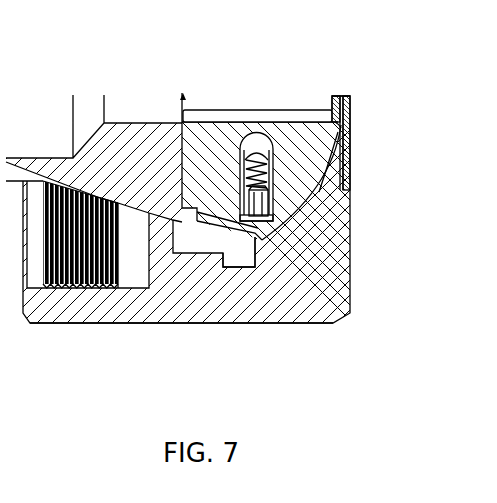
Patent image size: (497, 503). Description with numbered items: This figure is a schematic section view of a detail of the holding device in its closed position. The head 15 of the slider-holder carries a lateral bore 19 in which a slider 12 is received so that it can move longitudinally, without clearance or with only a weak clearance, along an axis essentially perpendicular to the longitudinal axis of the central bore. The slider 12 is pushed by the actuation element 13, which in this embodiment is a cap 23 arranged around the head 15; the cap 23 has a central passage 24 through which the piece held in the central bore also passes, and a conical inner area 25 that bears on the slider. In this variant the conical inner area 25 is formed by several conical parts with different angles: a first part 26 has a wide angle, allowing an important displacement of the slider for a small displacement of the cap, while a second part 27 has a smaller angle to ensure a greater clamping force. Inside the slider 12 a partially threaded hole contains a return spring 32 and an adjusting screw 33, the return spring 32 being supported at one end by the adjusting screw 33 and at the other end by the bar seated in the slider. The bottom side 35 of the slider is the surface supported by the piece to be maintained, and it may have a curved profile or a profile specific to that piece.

The slider 12 is at (216, 133).
The actuation element 13 is at (95, 327).
The head 15 is at (130, 131).
The lateral bore 19 is at (258, 232).
The cap 23 is at (211, 302).
The central passage 24 is at (343, 96).
The conical inner area 25 is at (326, 190).
The first part 26 is at (350, 145).
The second part 27 is at (300, 222).
The return spring 32 is at (312, 200).
The adjusting screw 33 is at (270, 223).
The bottom side 35 is at (290, 109).